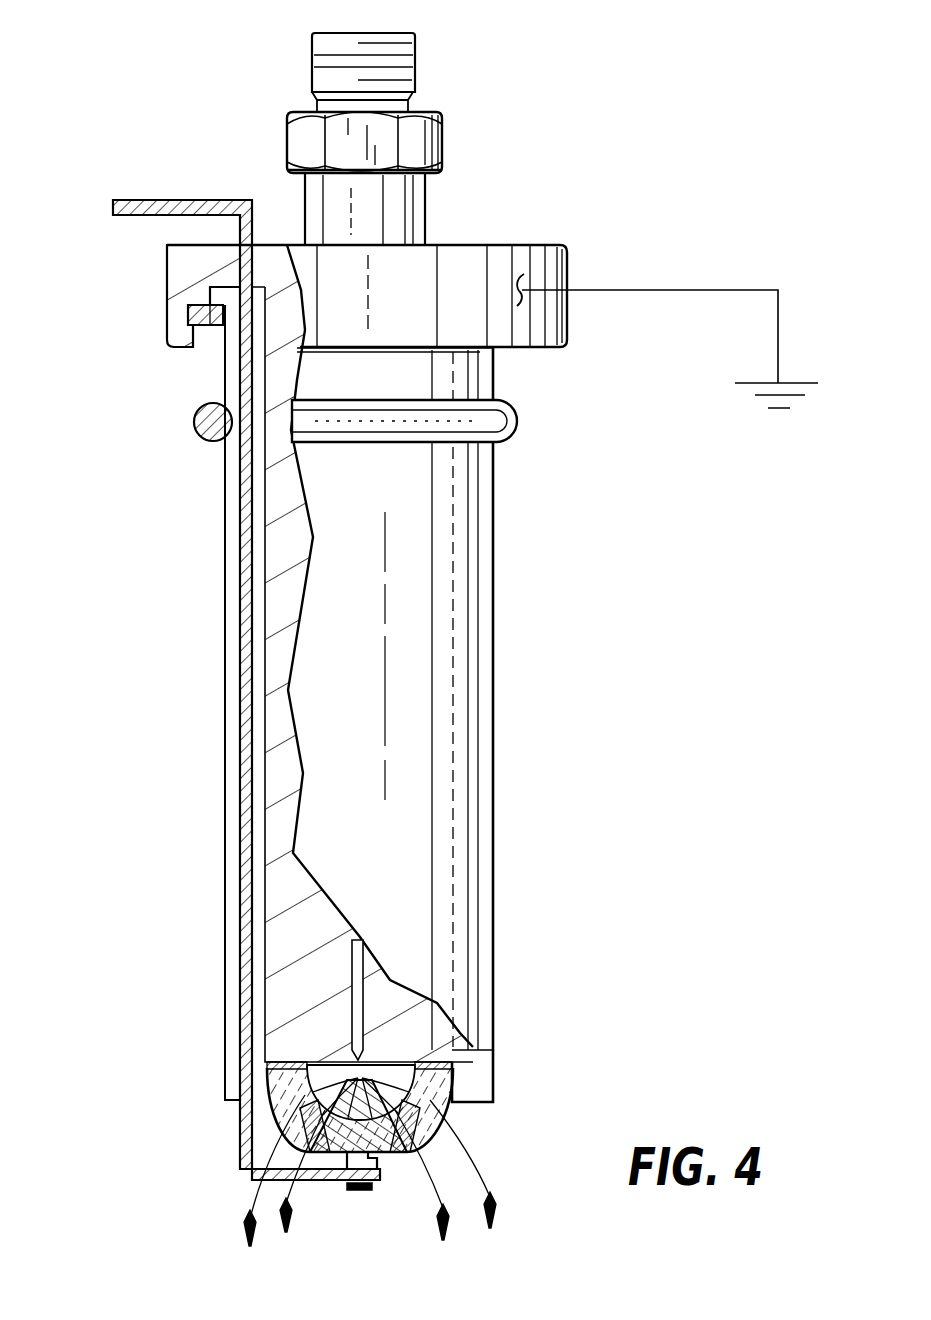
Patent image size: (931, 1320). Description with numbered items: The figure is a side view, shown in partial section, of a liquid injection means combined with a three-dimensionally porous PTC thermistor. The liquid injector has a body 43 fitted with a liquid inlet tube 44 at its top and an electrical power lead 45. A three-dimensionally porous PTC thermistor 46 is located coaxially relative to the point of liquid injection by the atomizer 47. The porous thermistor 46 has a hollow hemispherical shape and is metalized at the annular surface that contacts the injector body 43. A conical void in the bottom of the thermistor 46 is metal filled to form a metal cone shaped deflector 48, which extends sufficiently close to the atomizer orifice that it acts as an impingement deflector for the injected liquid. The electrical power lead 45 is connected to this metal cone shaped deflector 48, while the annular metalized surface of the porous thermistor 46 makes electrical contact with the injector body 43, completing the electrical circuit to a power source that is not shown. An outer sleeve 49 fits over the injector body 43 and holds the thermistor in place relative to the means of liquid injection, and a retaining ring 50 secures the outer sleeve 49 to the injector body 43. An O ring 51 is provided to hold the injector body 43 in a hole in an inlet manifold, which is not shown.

The injector body 43 is at (474, 246).
The liquid inlet tube 44 is at (378, 33).
The electrical power lead 45 is at (138, 201).
The 3-dimensionally porous PTC thermistor 46 is at (448, 1106).
The atomizer 47 is at (360, 945).
The metal cone shaped deflector 48 is at (386, 1156).
The outer sleeve 49 is at (226, 1074).
The retaining ring 50 is at (192, 311).
The O ring 51 is at (200, 409).